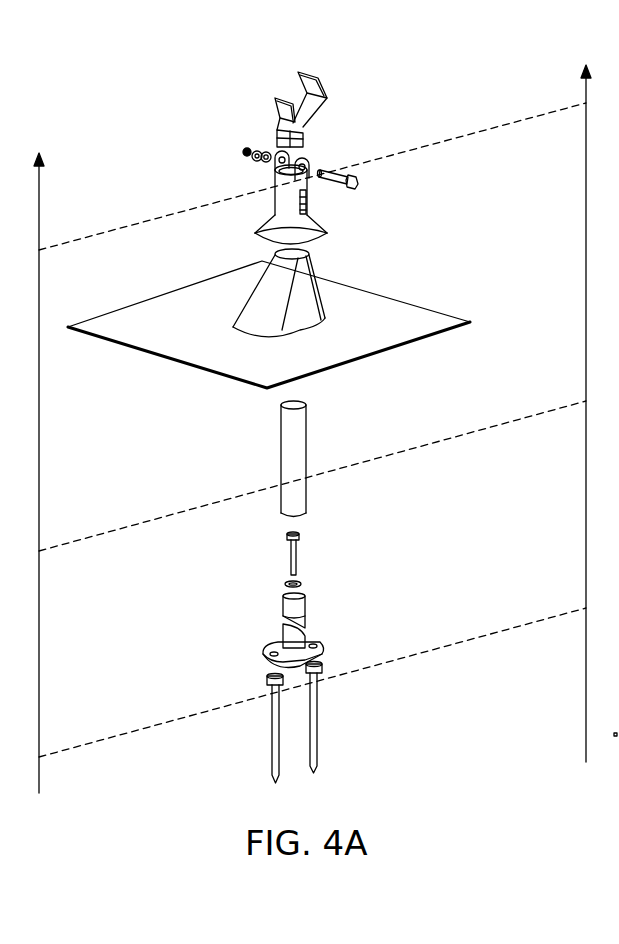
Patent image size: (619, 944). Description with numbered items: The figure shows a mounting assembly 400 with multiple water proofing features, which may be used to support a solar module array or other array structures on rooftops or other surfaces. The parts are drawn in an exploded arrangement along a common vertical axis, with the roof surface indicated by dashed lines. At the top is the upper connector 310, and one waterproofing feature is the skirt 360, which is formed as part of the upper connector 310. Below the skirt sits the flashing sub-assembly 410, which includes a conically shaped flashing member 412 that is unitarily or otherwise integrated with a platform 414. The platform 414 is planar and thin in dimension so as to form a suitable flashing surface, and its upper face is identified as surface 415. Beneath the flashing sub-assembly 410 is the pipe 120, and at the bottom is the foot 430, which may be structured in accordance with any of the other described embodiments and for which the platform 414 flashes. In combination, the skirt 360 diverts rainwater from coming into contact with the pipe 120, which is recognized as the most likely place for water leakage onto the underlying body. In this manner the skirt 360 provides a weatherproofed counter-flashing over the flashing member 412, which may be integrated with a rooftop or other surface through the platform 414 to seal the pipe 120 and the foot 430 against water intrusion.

The mounting assembly 400 is at (105, 206).
The flashing sub-assembly 410 is at (288, 278).
The flashing member 412 is at (263, 298).
The platform 414 is at (443, 337).
The flashing base plate surface 415 is at (400, 318).
The skirt 360 is at (268, 220).
The upper connector 310 is at (310, 184).
The pipe 120 is at (288, 456).
The foot 430 is at (336, 639).